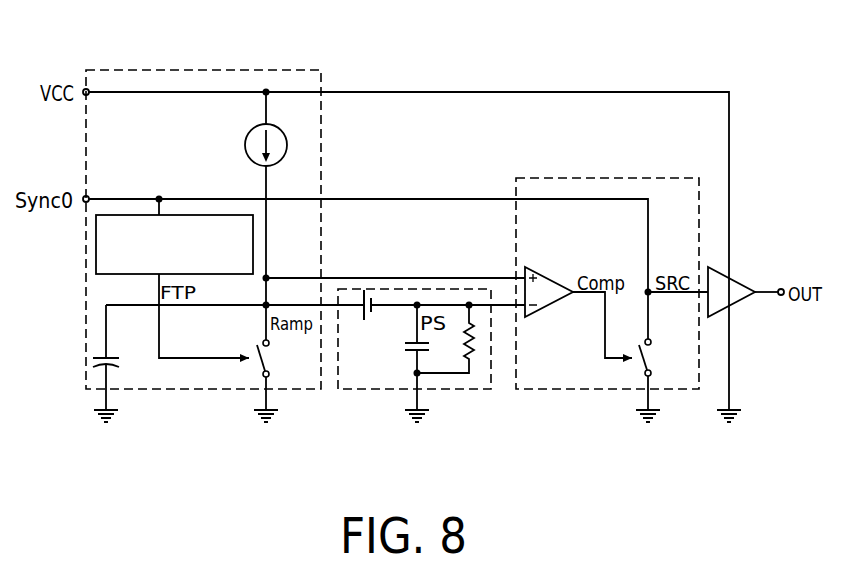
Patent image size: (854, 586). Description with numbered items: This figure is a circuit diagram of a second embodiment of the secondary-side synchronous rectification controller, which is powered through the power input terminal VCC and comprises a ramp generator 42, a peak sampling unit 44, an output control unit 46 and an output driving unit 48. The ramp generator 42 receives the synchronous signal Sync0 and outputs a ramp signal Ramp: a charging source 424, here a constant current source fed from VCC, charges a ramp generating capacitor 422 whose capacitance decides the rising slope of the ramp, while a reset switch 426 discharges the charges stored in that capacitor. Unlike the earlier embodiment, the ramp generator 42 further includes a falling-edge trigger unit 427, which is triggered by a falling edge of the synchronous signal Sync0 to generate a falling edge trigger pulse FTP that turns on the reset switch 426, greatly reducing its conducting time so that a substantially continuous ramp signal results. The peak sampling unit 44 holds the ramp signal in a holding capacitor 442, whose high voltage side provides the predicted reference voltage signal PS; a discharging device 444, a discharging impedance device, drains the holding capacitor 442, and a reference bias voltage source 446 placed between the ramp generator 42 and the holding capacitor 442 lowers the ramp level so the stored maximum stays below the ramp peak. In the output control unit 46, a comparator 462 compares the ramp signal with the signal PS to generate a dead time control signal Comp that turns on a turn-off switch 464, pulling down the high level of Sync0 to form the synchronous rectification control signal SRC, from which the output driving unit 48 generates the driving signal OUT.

The ramp generator 42 is at (273, 70).
The charging source 424 is at (282, 117).
The falling-edge trigger unit 427 is at (134, 214).
The ramp generating capacitor 422 is at (95, 352).
The reset switch 426 is at (276, 382).
The peak sampling unit 44 is at (386, 289).
The reference bias voltage source 446 is at (355, 297).
The holding capacitor 442 is at (399, 348).
The discharging device 444 is at (479, 350).
The output control unit 46 is at (607, 178).
The comparator 462 is at (567, 304).
The turn-off switch 464 is at (658, 358).
The output driving unit 48 is at (748, 263).